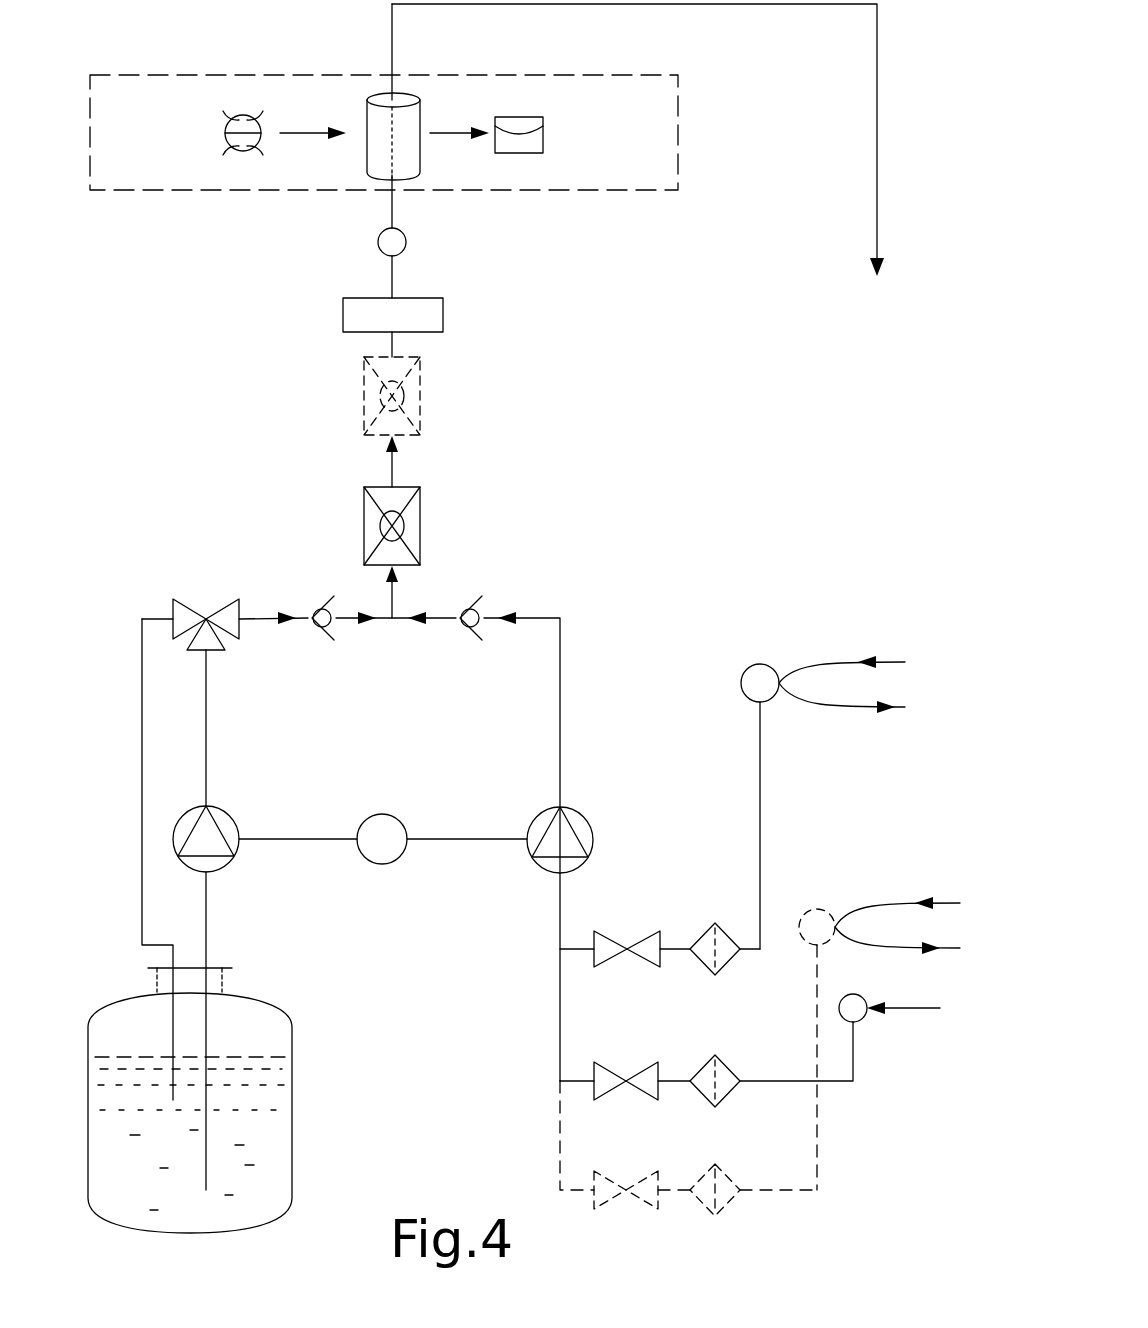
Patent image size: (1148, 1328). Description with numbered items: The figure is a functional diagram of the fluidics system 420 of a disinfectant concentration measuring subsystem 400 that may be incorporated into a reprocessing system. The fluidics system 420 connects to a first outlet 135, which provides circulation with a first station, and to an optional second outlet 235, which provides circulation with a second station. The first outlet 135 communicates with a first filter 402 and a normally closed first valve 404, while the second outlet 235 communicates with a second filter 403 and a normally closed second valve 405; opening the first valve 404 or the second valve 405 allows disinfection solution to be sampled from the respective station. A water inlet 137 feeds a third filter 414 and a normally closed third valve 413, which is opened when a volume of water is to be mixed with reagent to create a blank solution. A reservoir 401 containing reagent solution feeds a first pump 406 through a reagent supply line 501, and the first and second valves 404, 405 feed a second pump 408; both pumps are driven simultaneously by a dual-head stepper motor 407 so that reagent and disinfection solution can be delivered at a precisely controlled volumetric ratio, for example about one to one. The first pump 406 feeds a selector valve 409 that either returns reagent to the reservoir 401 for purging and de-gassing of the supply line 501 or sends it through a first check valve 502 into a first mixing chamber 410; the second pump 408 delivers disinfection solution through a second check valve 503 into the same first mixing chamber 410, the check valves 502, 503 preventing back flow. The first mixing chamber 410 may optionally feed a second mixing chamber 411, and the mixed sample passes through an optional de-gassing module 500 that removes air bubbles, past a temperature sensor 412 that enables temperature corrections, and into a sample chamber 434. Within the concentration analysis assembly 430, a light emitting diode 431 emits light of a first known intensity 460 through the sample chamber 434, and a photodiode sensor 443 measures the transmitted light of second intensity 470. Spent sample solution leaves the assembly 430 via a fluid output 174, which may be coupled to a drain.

The first outlet 135 is at (747, 670).
The water inlet 137 is at (863, 997).
The fluid output 174 is at (870, 278).
The second outlet 235 is at (822, 944).
The subsystem 400 is at (100, 872).
The reservoir 401 is at (292, 1093).
The first filter 402 is at (715, 923).
The second filter 403 is at (715, 1164).
The first valve 404 is at (596, 936).
The second valve 405 is at (596, 1178).
The first pump 406 is at (226, 865).
The dual-head stepper motor 407 is at (395, 862).
The second pump 408 is at (580, 812).
The selector valve 409 is at (239, 636).
The first mixing chamber 410 is at (420, 531).
The second mixing chamber 411 is at (420, 397).
The temperature sensor 412 is at (406, 242).
The third valve 413 is at (596, 1067).
The third filter 414 is at (737, 1000).
The fluidics system 420 is at (108, 752).
The concentration analysis assembly 430 is at (135, 230).
The light emitting diode 431 is at (226, 139).
The sample chamber 434 is at (365, 160).
The photodiode sensor 443 is at (543, 135).
The first known intensity 460 is at (296, 133).
The second intensity 470 is at (440, 133).
The de-gassing module 500 is at (443, 316).
The reagent supply line 501 is at (209, 942).
The first check valve 502 is at (322, 606).
The second check valve 503 is at (470, 606).